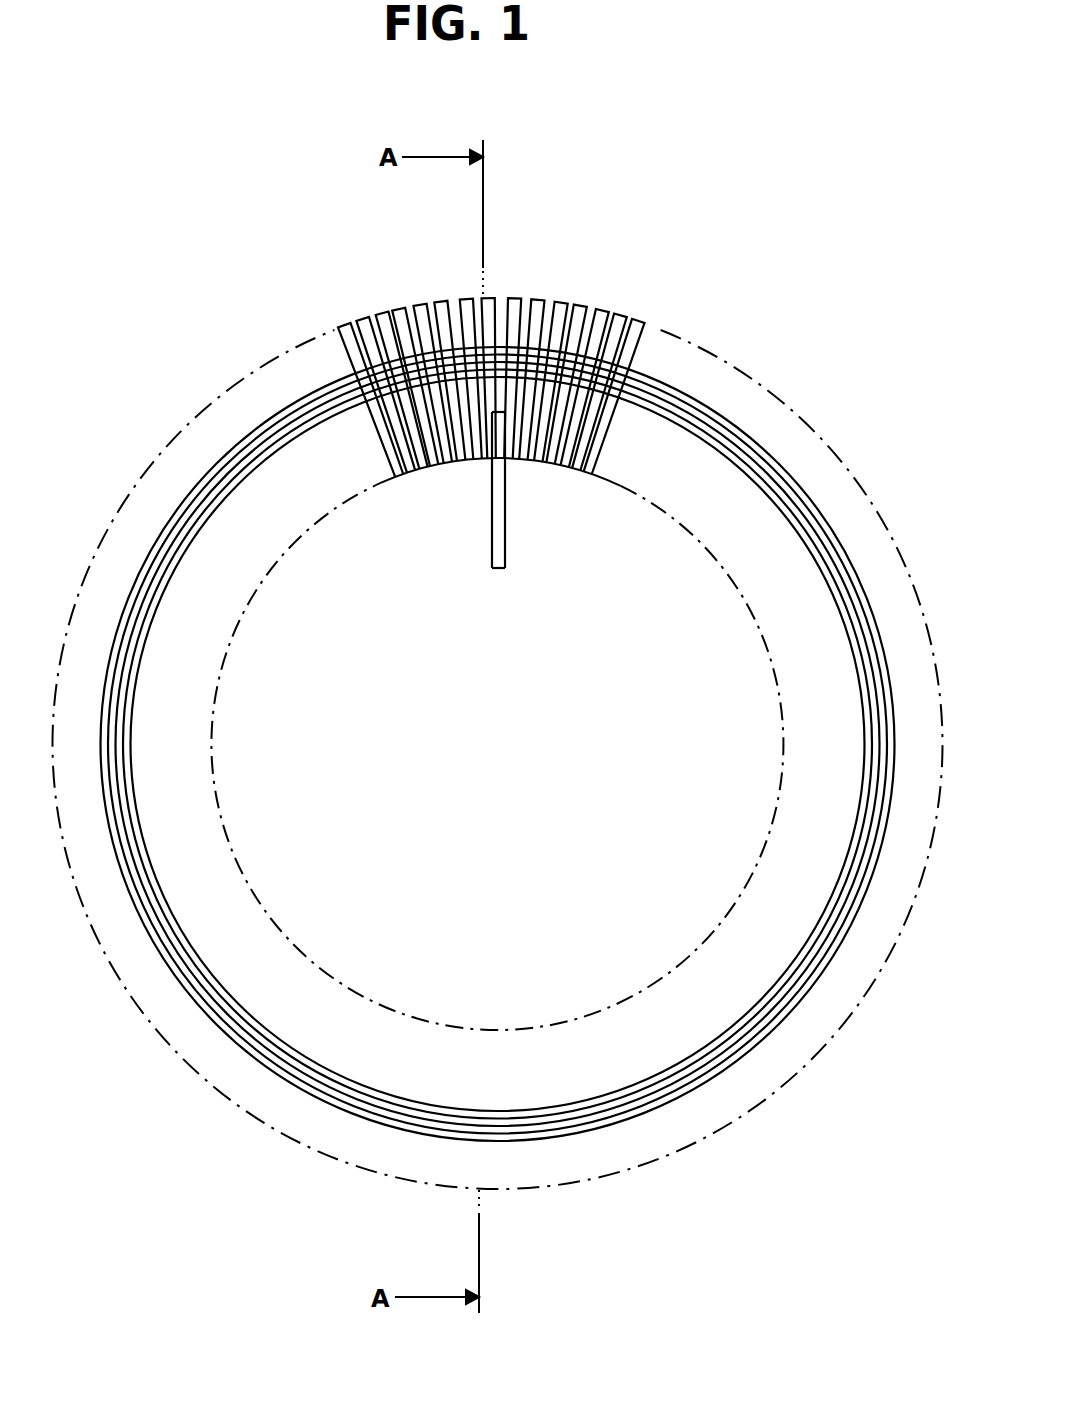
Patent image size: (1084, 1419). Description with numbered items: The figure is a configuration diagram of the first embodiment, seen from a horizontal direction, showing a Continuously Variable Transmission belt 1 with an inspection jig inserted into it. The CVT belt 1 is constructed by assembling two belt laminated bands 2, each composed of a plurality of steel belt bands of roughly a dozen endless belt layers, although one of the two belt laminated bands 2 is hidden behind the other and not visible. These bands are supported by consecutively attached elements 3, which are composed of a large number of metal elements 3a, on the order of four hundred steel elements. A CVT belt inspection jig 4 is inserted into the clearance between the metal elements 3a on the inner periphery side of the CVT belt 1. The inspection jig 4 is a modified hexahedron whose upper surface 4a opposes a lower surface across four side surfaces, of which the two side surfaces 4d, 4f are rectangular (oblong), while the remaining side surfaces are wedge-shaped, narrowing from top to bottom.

The CVT belt 1 is at (802, 331).
The belt laminated band 2 is at (627, 372).
The consecutively attached elements 3 is at (463, 327).
The metal element 3a is at (465, 300).
The CVT belt inspection jig 4 is at (486, 547).
The upper surface 4a is at (480, 557).
The side surface 4d is at (487, 487).
The side surface 4f is at (507, 503).